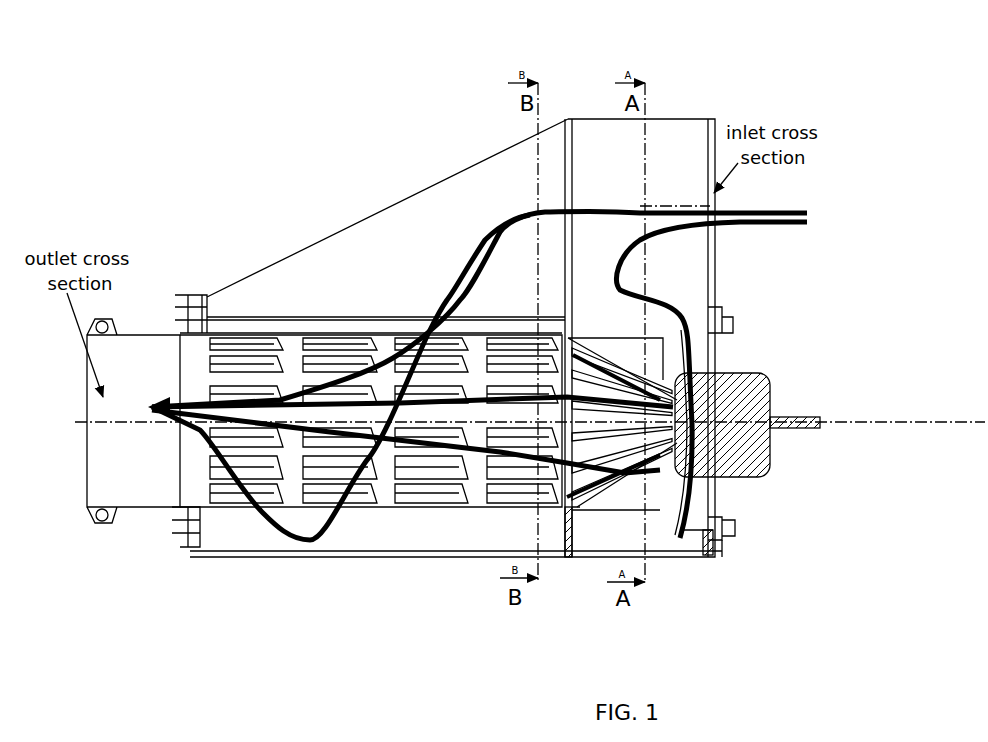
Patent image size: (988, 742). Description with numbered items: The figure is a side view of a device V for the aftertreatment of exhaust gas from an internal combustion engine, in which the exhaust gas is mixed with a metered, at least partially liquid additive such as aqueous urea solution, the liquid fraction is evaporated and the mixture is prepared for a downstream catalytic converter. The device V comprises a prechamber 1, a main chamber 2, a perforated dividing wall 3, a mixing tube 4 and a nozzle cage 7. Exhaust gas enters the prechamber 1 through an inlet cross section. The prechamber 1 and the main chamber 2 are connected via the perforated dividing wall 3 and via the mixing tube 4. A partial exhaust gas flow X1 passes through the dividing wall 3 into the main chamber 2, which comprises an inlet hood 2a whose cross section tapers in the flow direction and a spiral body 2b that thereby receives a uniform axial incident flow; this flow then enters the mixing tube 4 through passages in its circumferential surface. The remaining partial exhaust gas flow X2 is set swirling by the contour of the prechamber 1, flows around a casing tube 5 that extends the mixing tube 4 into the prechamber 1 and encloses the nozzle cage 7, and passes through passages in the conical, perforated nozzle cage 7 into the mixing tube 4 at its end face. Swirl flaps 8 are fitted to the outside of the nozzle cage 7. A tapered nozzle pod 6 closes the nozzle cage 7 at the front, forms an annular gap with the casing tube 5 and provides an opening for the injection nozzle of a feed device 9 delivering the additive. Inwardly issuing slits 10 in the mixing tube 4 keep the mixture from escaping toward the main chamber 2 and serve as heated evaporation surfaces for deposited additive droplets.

The prechamber 1 is at (687, 118).
The main chamber 2 is at (387, 219).
The inlet hood 2a is at (457, 170).
The spiral body 2b is at (317, 310).
The perforated separating device 3 is at (570, 119).
The mixing device 4 is at (365, 408).
The casing element 5 is at (587, 513).
The nozzle pod 6 is at (693, 350).
The intermediate device 7 is at (622, 470).
The swirl elements 8 is at (657, 475).
The feed device 9 is at (730, 418).
The slits 10 is at (420, 495).
The device V is at (60, 70).
The partial exhaust gas flow X1 is at (453, 255).
The partial exhaust gas flow X2 is at (683, 307).